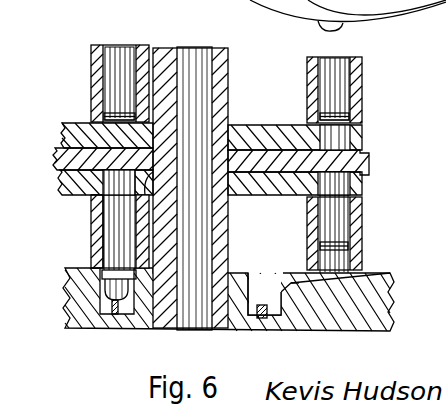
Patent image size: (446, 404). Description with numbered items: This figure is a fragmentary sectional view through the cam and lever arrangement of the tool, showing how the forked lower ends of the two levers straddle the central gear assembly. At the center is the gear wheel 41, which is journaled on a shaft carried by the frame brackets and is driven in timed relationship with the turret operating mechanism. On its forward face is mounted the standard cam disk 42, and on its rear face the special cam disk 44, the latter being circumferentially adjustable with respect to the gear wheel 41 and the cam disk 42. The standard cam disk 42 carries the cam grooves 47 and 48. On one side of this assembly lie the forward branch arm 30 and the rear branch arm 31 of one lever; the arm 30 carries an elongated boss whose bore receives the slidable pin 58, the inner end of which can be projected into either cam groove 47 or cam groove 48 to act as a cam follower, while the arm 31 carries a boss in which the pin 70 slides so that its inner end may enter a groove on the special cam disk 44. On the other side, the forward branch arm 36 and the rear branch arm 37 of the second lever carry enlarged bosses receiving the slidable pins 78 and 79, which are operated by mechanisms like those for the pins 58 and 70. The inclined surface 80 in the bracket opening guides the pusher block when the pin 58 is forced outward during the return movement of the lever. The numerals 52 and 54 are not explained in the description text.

The forward branch arm 30 is at (92, 222).
The rear branch arm 31 is at (97, 85).
The forward branch arm 36 is at (360, 251).
The rear branch arm 37 is at (362, 92).
The gear wheel 41 is at (58, 156).
The cam disk 42 is at (249, 195).
The cam disk 44 is at (62, 130).
The cam groove 47 is at (62, 188).
The cam groove 48 is at (358, 188).
The wheel rim 52 is at (318, 27).
The upper right sleeve 54 is at (338, 146).
The slidable pin 58 is at (93, 232).
The pin 70 is at (119, 52).
The slidable pin 78 is at (337, 219).
The slidable pin 79 is at (337, 60).
The inclined surface 80 is at (94, 268).